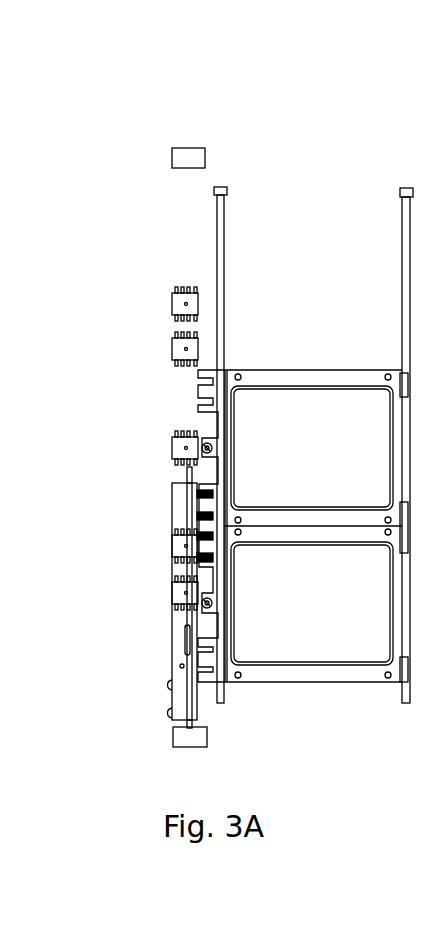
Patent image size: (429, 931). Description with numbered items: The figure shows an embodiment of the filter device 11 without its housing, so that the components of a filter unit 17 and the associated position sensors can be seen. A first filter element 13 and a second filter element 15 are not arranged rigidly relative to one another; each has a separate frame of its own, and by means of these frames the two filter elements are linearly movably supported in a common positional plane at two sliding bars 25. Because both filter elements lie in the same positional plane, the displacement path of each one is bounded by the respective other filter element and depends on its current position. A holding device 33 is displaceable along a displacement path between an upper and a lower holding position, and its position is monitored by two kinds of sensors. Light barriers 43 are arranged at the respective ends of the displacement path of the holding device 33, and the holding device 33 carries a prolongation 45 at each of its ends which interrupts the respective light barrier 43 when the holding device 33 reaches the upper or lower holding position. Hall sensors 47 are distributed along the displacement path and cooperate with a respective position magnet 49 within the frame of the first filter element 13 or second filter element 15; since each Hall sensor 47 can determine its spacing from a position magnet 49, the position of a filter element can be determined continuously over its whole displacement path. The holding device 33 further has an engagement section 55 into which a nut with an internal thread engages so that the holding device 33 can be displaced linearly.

The filter device 11 is at (192, 109).
The first filter element 13 is at (327, 625).
The second filter element 15 is at (327, 467).
The filter unit 17 is at (313, 109).
The sliding bar 25 is at (220, 227).
The holding device 33 is at (172, 643).
The light barrier 43 is at (185, 160).
The prolongation 45 is at (188, 477).
The Hall sensor 47 is at (182, 302).
The position magnet 49 is at (205, 444).
The engagement section 55 is at (169, 697).